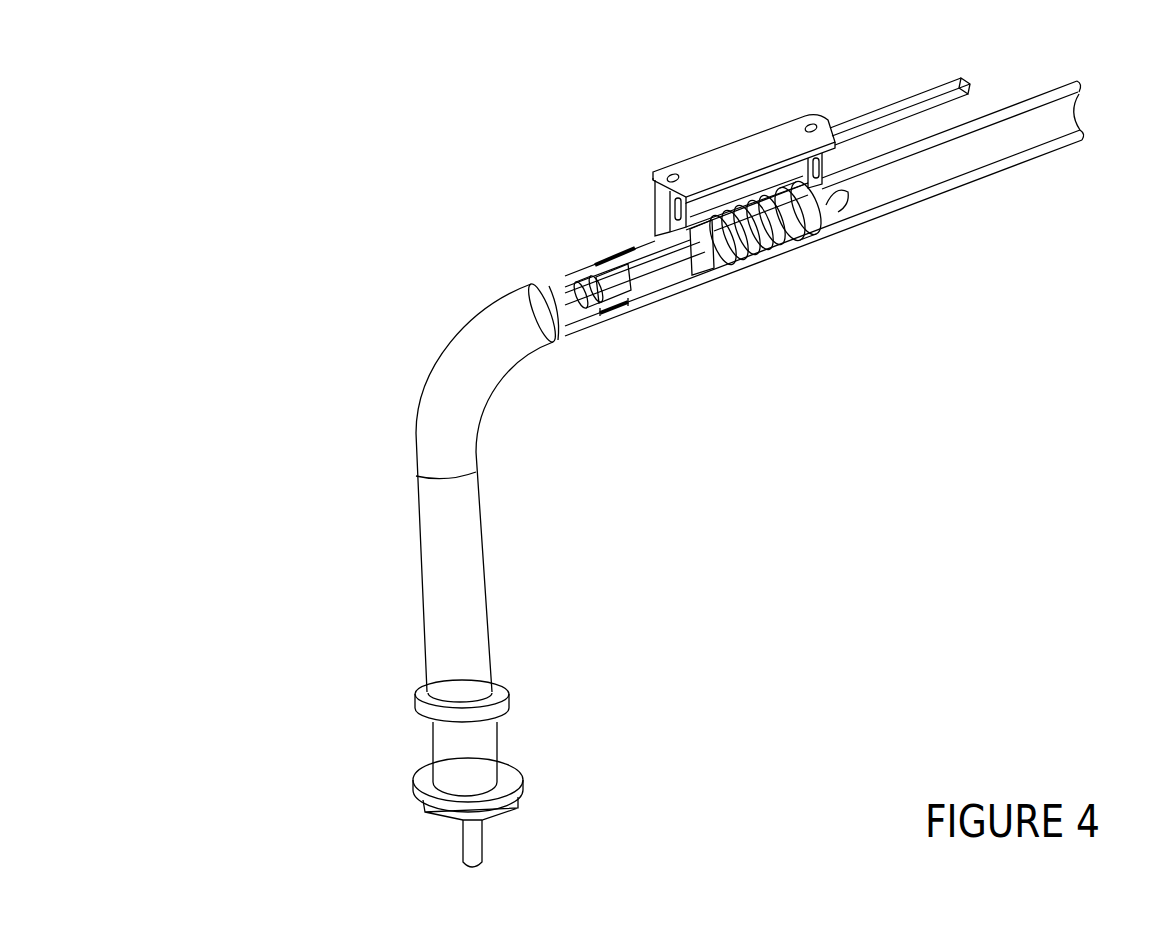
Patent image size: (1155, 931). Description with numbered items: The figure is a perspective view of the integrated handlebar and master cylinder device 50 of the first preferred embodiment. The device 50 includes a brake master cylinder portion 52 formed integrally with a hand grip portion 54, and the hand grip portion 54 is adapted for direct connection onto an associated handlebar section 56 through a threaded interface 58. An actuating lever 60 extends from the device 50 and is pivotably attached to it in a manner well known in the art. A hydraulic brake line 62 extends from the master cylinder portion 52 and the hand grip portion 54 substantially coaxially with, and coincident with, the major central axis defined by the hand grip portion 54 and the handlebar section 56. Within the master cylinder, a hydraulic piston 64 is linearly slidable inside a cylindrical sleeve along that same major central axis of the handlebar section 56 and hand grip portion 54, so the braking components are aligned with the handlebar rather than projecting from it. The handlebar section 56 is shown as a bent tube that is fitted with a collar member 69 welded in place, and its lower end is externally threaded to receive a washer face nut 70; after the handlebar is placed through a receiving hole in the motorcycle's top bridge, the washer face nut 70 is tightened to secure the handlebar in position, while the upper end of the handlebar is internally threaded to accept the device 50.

The integrated handlebar and master cylinder device 50 is at (643, 172).
The brake master cylinder portion 52 is at (748, 133).
The hand grip portion 54 is at (938, 200).
The handlebar section 56 is at (412, 506).
The threaded interface 58 is at (632, 313).
The actuating lever 60 is at (898, 100).
The hydraulic brake line 62 is at (560, 282).
The hydraulic piston 64 is at (790, 242).
The collar member 69 is at (413, 698).
The washer face nut 70 is at (412, 768).